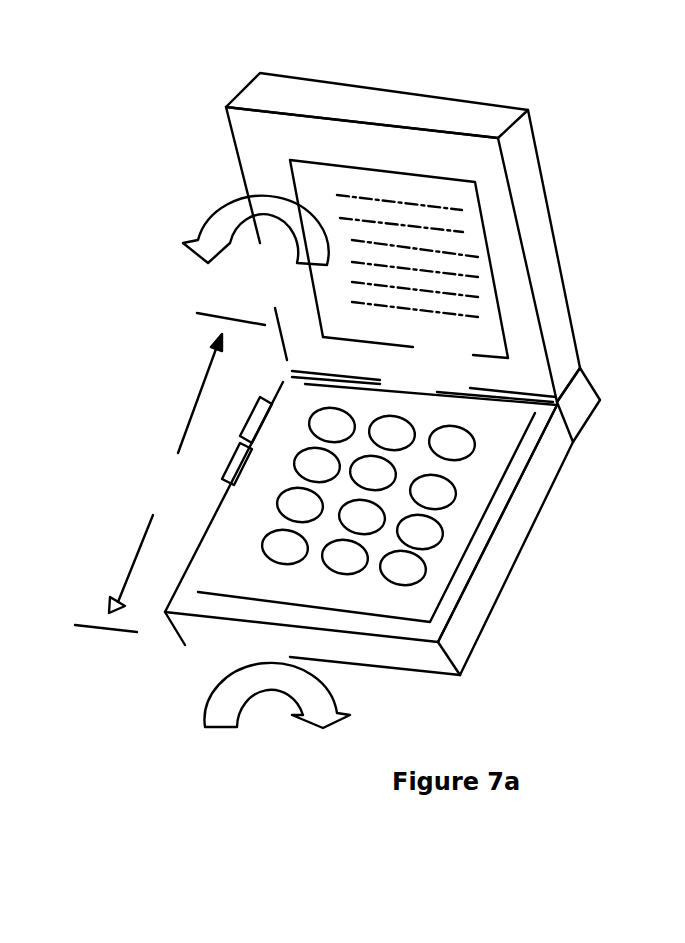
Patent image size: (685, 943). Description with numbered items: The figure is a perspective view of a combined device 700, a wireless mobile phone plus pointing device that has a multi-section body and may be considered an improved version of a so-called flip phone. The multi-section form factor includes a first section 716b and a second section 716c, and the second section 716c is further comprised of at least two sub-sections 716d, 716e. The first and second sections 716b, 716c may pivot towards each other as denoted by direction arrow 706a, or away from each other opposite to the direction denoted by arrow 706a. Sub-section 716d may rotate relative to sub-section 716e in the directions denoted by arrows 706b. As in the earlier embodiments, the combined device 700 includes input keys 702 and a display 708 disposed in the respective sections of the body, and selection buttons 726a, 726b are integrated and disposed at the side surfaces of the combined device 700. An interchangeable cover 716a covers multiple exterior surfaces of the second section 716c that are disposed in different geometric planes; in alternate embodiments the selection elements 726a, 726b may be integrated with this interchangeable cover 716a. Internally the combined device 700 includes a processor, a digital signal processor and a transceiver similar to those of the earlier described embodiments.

The combined device 700 is at (158, 67).
The input keys 702 is at (387, 533).
The direction arrow 706a is at (256, 241).
The arrows 706b is at (277, 715).
The display 708 is at (462, 230).
The interchangeable cover 716a is at (424, 384).
The first section 716b is at (367, 115).
The second section 716c is at (193, 407).
The sub-section 716d is at (607, 442).
The sub-section 716e is at (510, 525).
The selection button 726a is at (245, 413).
The selection button 726b is at (180, 433).